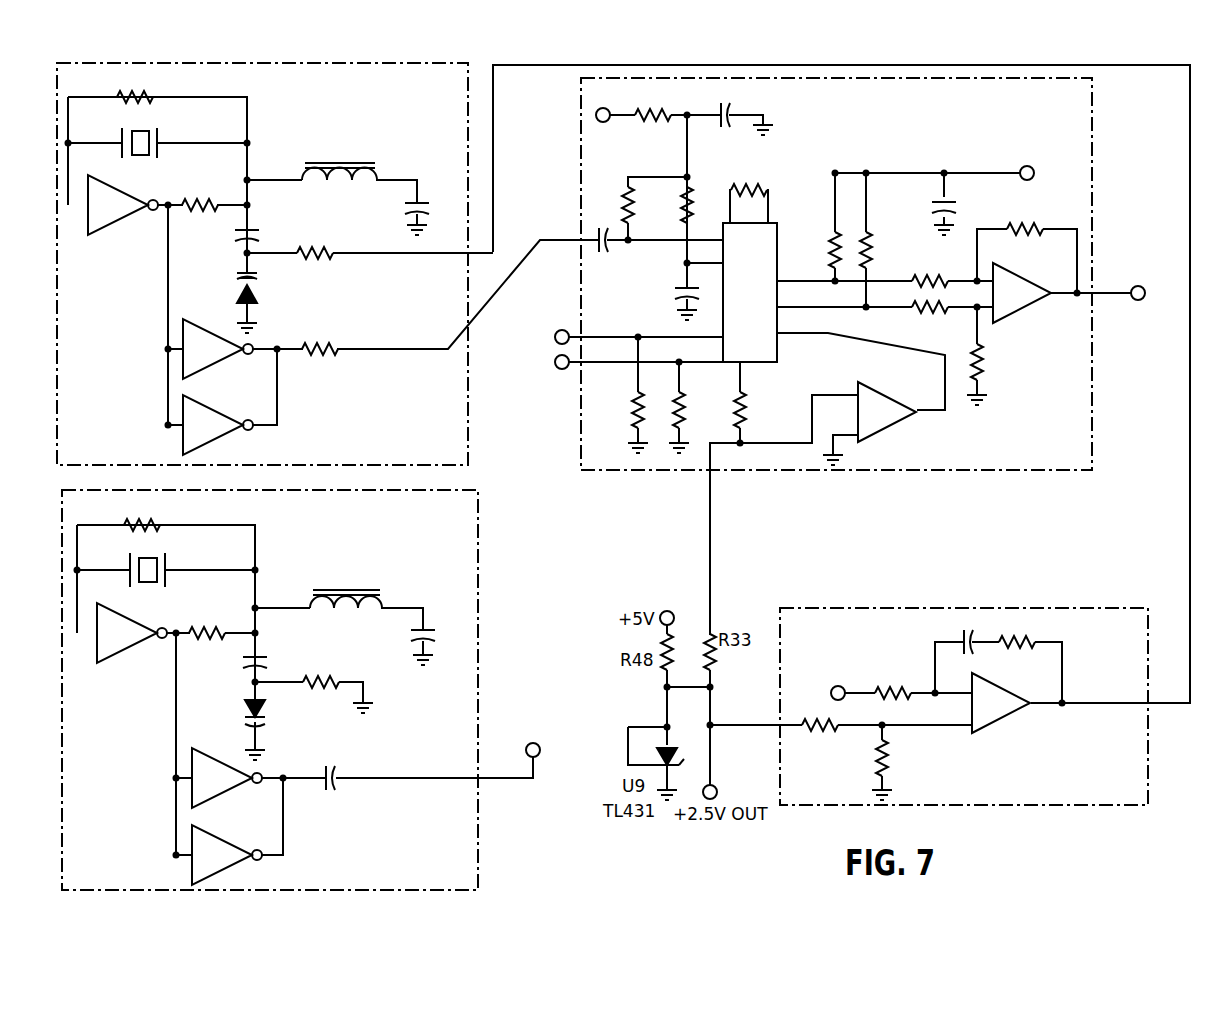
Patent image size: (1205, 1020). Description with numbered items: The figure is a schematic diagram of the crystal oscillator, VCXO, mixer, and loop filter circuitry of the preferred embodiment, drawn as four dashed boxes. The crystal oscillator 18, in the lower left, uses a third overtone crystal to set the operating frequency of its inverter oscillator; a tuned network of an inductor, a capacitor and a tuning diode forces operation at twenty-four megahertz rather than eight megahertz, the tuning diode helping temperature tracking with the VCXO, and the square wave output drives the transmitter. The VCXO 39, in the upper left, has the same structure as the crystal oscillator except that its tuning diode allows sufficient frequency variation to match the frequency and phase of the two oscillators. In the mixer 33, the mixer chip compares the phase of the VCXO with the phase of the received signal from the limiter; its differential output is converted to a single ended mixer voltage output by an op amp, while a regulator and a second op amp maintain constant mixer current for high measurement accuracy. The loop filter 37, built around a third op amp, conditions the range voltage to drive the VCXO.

The VCXO 39 is at (470, 432).
The oscillator 18 is at (478, 548).
The mixer 33 is at (982, 468).
The loop filter 37 is at (905, 608).